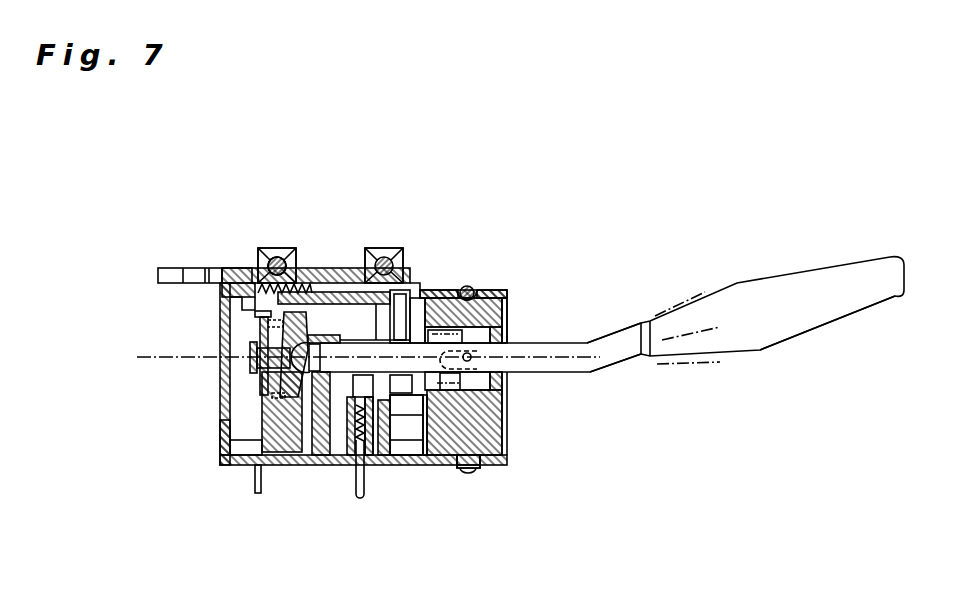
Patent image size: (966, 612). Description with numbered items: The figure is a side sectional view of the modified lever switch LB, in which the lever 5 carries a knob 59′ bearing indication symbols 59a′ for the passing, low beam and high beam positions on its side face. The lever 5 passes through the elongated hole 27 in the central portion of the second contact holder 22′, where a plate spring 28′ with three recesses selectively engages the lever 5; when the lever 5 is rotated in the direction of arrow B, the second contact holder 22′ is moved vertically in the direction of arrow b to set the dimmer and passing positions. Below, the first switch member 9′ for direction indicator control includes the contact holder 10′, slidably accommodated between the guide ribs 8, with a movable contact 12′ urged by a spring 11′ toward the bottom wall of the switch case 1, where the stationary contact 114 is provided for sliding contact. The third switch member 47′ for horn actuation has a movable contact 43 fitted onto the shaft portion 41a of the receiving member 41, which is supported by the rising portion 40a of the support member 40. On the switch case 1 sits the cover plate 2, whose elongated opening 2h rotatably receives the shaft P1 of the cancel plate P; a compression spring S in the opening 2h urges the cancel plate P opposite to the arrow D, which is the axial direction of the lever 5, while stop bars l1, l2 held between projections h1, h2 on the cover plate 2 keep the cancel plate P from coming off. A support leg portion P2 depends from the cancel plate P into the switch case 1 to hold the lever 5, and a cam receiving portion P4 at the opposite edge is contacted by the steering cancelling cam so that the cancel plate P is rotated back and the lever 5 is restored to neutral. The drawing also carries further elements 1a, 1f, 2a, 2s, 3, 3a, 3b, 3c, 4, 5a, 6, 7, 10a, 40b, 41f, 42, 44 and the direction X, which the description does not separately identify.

The switch case 1 is at (524, 286).
The housing bottom 1a is at (478, 470).
The housing side wall 1f is at (218, 436).
The cover plate 2 is at (500, 286).
The cover portion 2a is at (478, 288).
The elongated opening 2h is at (240, 282).
The steel ball 2s is at (460, 286).
The movable member 3 is at (495, 412).
The movable member arm 3a is at (508, 313).
The movable member lower portion 3b is at (500, 372).
The movable member upper portion 3c is at (416, 298).
The spring 4 is at (472, 282).
The lever 5 is at (616, 345).
The lever pivot 5a is at (324, 338).
The pin 6 is at (505, 343).
The slider 7 is at (496, 388).
The guide ribs 8 is at (388, 412).
The first switch member 9′ is at (352, 468).
The support portion 10a is at (335, 292).
The contact holder 10′ is at (432, 468).
The spring 11′ is at (406, 468).
The movable contact 12′ is at (394, 468).
The stationary contact 114 is at (377, 468).
The second contact holder 22′ is at (341, 468).
The elongated hole 27 is at (300, 468).
The plate spring 28′ is at (287, 468).
The support member 40 is at (262, 452).
The rising portion 40a is at (258, 328).
The push rod head 40b is at (250, 355).
The receiving member 41 is at (296, 290).
The shaft portion 41a is at (266, 396).
The slide plate foot 41f is at (252, 468).
The cam 42 is at (290, 392).
The movable contact 43 is at (266, 432).
The bearing block 44 is at (256, 270).
The third switch member 47′ is at (250, 362).
The knob 59′ is at (880, 257).
The indication symbols 59a′ is at (802, 324).
The cancel plate P is at (250, 284).
The shaft P1 is at (238, 298).
The support leg portion P2 is at (480, 460).
The cam receiving portion P4 is at (178, 278).
The compression spring S is at (290, 283).
The stop bar l1 is at (270, 272).
The stop bar l2 is at (384, 268).
The projection h1 is at (283, 258).
The projection h2 is at (396, 275).
The arrow b is at (317, 357).
The lever switch LB is at (656, 194).
The arrow B is at (619, 303).
The arrow D is at (658, 383).
The direction X is at (137, 357).